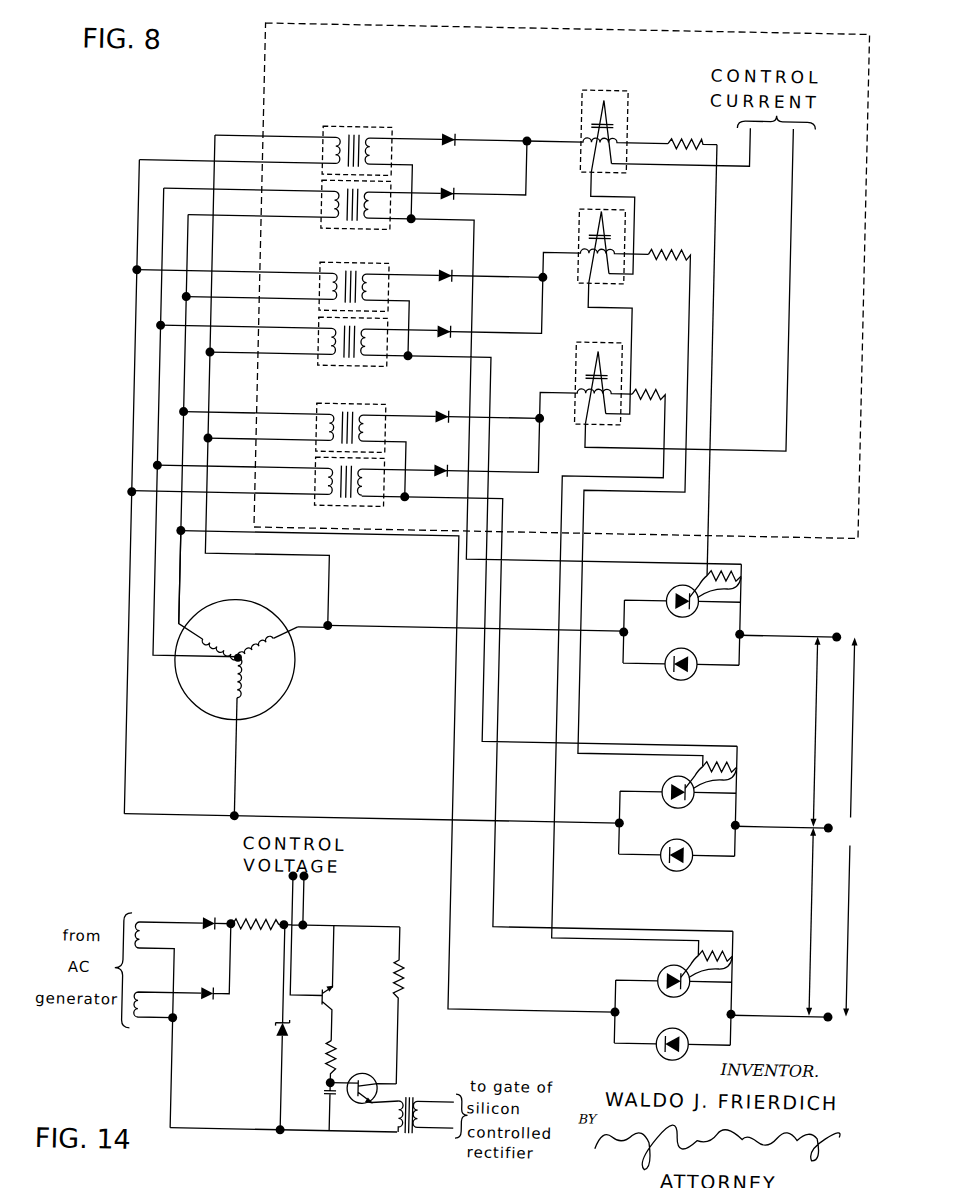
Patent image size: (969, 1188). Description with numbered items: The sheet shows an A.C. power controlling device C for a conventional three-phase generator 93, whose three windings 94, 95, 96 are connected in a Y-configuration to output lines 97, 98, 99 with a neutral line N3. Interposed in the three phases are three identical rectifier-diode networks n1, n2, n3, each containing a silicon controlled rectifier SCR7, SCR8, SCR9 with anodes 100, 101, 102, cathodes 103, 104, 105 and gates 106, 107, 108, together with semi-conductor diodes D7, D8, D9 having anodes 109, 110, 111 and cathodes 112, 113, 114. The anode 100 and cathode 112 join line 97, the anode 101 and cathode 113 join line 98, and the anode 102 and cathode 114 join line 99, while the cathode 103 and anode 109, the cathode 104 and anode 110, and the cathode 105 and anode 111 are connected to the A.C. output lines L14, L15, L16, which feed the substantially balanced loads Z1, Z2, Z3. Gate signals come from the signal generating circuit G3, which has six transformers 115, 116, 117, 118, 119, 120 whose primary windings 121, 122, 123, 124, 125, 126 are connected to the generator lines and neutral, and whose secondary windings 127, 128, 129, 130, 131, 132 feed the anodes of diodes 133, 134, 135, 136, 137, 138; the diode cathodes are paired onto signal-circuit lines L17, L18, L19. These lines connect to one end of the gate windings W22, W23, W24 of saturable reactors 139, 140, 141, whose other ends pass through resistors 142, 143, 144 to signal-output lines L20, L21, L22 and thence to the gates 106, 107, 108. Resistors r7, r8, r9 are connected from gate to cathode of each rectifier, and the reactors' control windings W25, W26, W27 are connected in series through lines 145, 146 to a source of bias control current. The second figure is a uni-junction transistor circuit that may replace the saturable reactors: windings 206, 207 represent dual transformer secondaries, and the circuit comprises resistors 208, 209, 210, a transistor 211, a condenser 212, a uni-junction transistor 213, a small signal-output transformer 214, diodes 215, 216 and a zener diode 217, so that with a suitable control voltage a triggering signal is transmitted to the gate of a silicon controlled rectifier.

In FIG. 8, the three-phase generator 93 is at (232, 681).
In FIG. 8, the winding 94 is at (267, 656).
In FIG. 8, the winding 95 is at (254, 690).
In FIG. 8, the winding 96 is at (227, 641).
In FIG. 8, the generator output line 97 is at (339, 624).
In FIG. 8, the generator output line 98 is at (251, 752).
In FIG. 8, the generator output line 99 is at (192, 580).
In FIG. 8, the anode 100 is at (706, 620).
In FIG. 8, the anode 101 is at (701, 823).
In FIG. 8, the anode 102 is at (679, 991).
In FIG. 8, the cathode 103 is at (684, 582).
In FIG. 8, the cathode 104 is at (684, 776).
In FIG. 8, the cathode 105 is at (690, 963).
In FIG. 8, the gate 106 is at (751, 571).
In FIG. 8, the gate 107 is at (752, 764).
In FIG. 8, the gate 108 is at (752, 948).
In FIG. 8, the anode 109 is at (708, 663).
In FIG. 8, the anode 110 is at (712, 851).
In FIG. 8, the anode 111 is at (710, 1030).
In FIG. 8, the cathode 112 is at (681, 664).
In FIG. 8, the cathode 113 is at (682, 854).
In FIG. 8, the cathode 114 is at (621, 1045).
In FIG. 8, the transformer 115 is at (358, 124).
In FIG. 8, the transformer 116 is at (338, 228).
In FIG. 8, the transformer 117 is at (330, 262).
In FIG. 8, the transformer 118 is at (338, 364).
In FIG. 8, the transformer 119 is at (332, 404).
In FIG. 8, the transformer 120 is at (336, 505).
In FIG. 8, the primary winding 121 is at (334, 149).
In FIG. 8, the primary winding 122 is at (334, 204).
In FIG. 8, the primary winding 123 is at (334, 286).
In FIG. 8, the primary winding 124 is at (334, 339).
In FIG. 8, the primary winding 125 is at (334, 426).
In FIG. 8, the primary winding 126 is at (334, 482).
In FIG. 8, the secondary winding 127 is at (372, 150).
In FIG. 8, the secondary winding 128 is at (380, 213).
In FIG. 8, the secondary winding 129 is at (372, 286).
In FIG. 8, the secondary winding 130 is at (383, 352).
In FIG. 8, the secondary winding 131 is at (372, 427).
In FIG. 8, the secondary winding 132 is at (383, 494).
In FIG. 8, the diode 133 is at (454, 129).
In FIG. 8, the diode 134 is at (455, 184).
In FIG. 8, the diode 135 is at (456, 266).
In FIG. 8, the diode 136 is at (456, 322).
In FIG. 8, the diode 137 is at (487, 407).
In FIG. 8, the diode 138 is at (486, 447).
In FIG. 8, the saturable reactor 139 is at (638, 171).
In FIG. 8, the saturable reactor 140 is at (601, 308).
In FIG. 8, the saturable reactor 141 is at (661, 291).
In FIG. 8, the resistor 142 is at (702, 131).
In FIG. 8, the resistor 143 is at (662, 247).
In FIG. 8, the resistor 144 is at (650, 386).
In FIG. 8, the line 145 is at (728, 162).
In FIG. 8, the line 146 is at (794, 181).
In FIG. 14, the winding 206 is at (158, 938).
In FIG. 14, the winding 207 is at (160, 1007).
In FIG. 14, the resistor 208 is at (257, 921).
In FIG. 14, the resistor 209 is at (422, 973).
In FIG. 14, the resistor 210 is at (360, 1057).
In FIG. 14, the transistor 211 is at (352, 996).
In FIG. 14, the condenser 212 is at (348, 1091).
In FIG. 14, the uni-junction transistor 213 is at (396, 1099).
In FIG. 14, the signal-output transformer 214 is at (427, 1134).
In FIG. 14, the diode 215 is at (236, 892).
In FIG. 14, the diode 216 is at (222, 1006).
In FIG. 14, the zener diode 217 is at (302, 1040).
In FIG. 8, the signal generating circuit G3 is at (263, 112).
In FIG. 8, the neutral line N3 is at (248, 659).
In FIG. 8, the A.C. output line L14 is at (812, 630).
In FIG. 8, the A.C. output line L15 is at (792, 818).
In FIG. 8, the A.C. output line L16 is at (795, 1007).
In FIG. 8, the signal-circuit line L17 is at (580, 134).
In FIG. 8, the signal-circuit line L18 is at (580, 247).
In FIG. 8, the signal-circuit line L19 is at (581, 387).
In FIG. 8, the signal-output line L20 is at (719, 276).
In FIG. 8, the signal-output line L21 is at (718, 331).
In FIG. 8, the signal-output line L22 is at (611, 471).
In FIG. 8, the gate winding W22 is at (597, 132).
In FIG. 8, the gate winding W23 is at (603, 266).
In FIG. 8, the gate winding W24 is at (607, 416).
In FIG. 8, the control winding W25 is at (590, 86).
In FIG. 8, the control winding W26 is at (592, 215).
In FIG. 8, the control winding W27 is at (596, 358).
In FIG. 8, the silicon controlled rectifier SCR7 is at (647, 631).
In FIG. 8, the silicon controlled rectifier SCR8 is at (643, 823).
In FIG. 8, the silicon controlled rectifier SCR9 is at (643, 1007).
In FIG. 8, the semi-conductor diode D7 is at (699, 648).
In FIG. 8, the semi-conductor diode D8 is at (702, 866).
In FIG. 8, the semi-conductor diode D9 is at (642, 1031).
In FIG. 8, the resistor r7 is at (728, 566).
In FIG. 8, the resistor r8 is at (750, 753).
In FIG. 8, the resistor r9 is at (751, 942).
In FIG. 8, the rectifier-diode network n1 is at (741, 600).
In FIG. 8, the rectifier-diode network n2 is at (745, 797).
In FIG. 8, the rectifier-diode network n3 is at (740, 982).
In FIG. 8, the load Z1 is at (824, 732).
In FIG. 8, the load Z2 is at (820, 922).
In FIG. 8, the load Z3 is at (851, 826).
In FIG. 8, the A.C. power controlling device C is at (560, 1003).